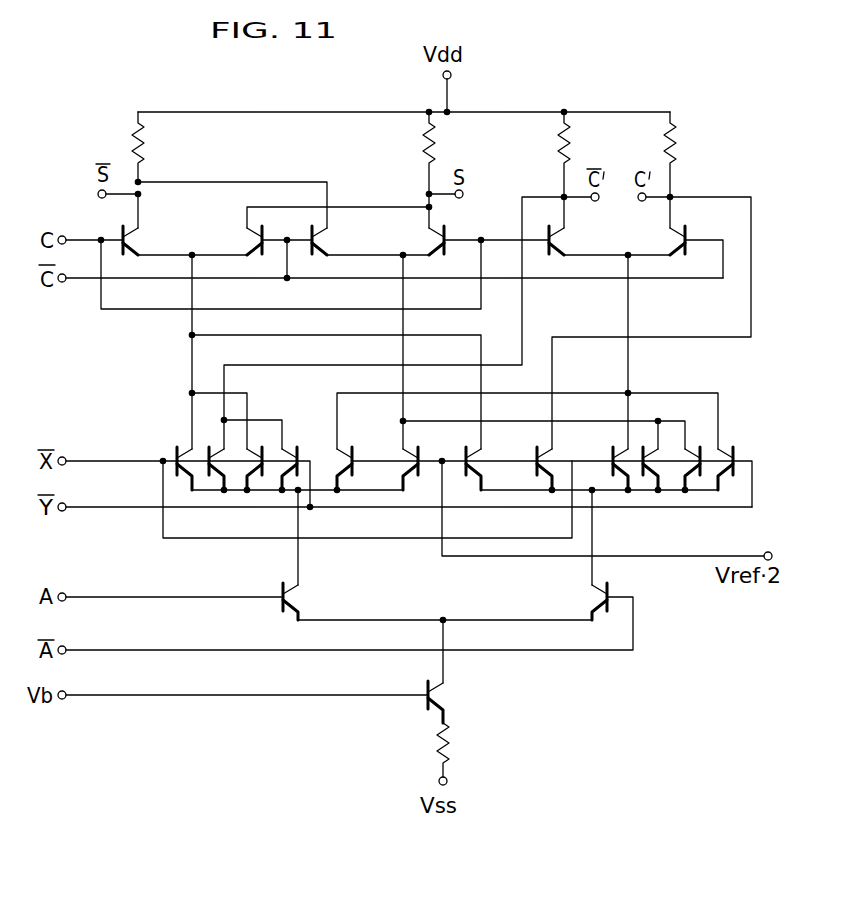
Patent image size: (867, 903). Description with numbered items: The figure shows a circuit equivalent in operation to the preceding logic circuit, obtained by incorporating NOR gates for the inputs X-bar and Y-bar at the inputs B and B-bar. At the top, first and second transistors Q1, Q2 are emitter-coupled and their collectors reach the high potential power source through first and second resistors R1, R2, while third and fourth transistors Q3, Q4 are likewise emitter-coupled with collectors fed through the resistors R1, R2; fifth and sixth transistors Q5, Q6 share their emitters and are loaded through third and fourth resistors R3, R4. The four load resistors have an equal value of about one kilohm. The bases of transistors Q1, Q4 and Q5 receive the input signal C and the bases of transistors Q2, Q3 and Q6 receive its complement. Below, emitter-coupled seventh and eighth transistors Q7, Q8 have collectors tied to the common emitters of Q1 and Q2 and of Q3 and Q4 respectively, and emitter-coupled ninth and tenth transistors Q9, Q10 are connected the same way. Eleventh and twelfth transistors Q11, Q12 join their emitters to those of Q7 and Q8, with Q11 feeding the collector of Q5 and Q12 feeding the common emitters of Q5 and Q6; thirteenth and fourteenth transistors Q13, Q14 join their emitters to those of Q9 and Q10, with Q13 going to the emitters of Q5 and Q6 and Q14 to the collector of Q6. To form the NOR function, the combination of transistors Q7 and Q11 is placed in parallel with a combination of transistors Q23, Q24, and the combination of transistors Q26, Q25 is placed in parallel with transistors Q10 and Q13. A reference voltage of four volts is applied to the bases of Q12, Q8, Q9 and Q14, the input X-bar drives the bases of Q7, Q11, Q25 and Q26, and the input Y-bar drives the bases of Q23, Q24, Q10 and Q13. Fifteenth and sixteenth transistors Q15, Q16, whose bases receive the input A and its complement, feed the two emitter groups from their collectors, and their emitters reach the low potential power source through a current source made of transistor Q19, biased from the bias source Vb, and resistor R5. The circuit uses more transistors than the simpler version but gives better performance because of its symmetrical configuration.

The first resistor R1 is at (147, 142).
The second resistor R2 is at (423, 148).
The third resistor R3 is at (571, 146).
The fourth resistor R4 is at (678, 146).
The resistor R5 is at (450, 743).
The first transistor Q1 is at (135, 238).
The second transistor Q2 is at (244, 236).
The third transistor Q3 is at (322, 238).
The fourth transistor Q4 is at (424, 236).
The fifth transistor Q5 is at (558, 238).
The sixth transistor Q6 is at (670, 238).
The seventh transistor Q7 is at (178, 444).
The eighth transistor Q8 is at (411, 486).
The ninth transistor Q9 is at (467, 446).
The tenth transistor Q10 is at (692, 442).
The eleventh transistor Q11 is at (218, 494).
The twelfth transistor Q12 is at (347, 445).
The thirteenth transistor Q13 is at (741, 434).
The fourteenth transistor Q14 is at (539, 446).
The fifteenth transistor Q15 is at (296, 593).
The sixteenth transistor Q16 is at (589, 593).
The transistor Q19 is at (437, 695).
The transistor Q23 is at (256, 441).
The transistor Q24 is at (291, 444).
The transistor Q25 is at (618, 492).
The transistor Q26 is at (648, 492).